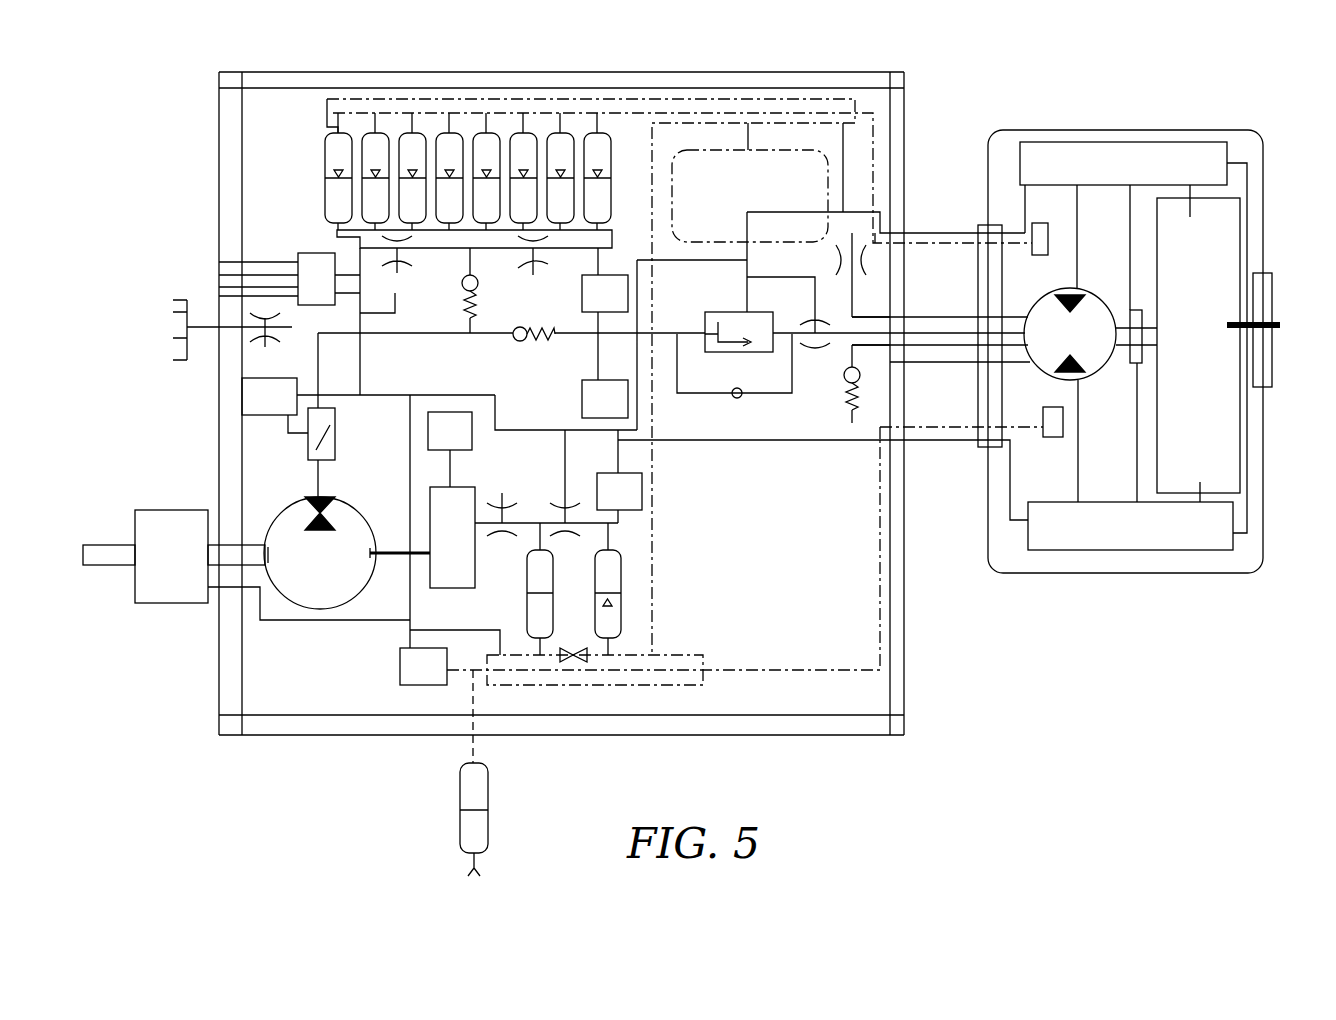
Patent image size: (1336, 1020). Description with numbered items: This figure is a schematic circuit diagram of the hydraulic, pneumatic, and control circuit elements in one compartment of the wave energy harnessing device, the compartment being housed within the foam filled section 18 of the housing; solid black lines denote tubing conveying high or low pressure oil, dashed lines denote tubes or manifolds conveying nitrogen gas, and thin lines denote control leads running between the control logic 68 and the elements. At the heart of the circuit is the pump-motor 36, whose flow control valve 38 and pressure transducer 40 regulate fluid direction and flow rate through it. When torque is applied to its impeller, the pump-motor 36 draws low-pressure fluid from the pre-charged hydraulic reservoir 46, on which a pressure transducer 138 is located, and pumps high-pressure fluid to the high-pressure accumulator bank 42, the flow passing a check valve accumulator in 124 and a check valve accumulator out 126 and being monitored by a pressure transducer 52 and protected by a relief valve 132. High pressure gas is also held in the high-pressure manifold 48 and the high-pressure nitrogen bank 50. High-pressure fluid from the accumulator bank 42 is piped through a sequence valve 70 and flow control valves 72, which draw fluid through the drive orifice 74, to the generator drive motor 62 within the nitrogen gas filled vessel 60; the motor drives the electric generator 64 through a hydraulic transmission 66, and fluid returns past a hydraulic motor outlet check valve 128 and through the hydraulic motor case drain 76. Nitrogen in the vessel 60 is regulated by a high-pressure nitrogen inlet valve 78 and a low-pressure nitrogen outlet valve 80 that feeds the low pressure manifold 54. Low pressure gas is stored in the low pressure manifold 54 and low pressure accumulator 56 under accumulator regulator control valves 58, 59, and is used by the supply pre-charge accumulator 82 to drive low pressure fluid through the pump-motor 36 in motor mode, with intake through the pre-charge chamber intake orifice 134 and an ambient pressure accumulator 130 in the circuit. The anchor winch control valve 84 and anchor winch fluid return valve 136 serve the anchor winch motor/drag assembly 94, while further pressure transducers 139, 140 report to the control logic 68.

The foam filled section 18 is at (180, 510).
The pump-motor 36 is at (340, 500).
The flow control valve 38 is at (335, 433).
The pressure transducer 40 is at (252, 418).
The high-pressure accumulator bank 42 is at (335, 200).
The pre-charged hydraulic reservoir 46 is at (477, 556).
The high-pressure manifold 48 is at (332, 108).
The high-pressure nitrogen bank 50 is at (774, 155).
The pressure transducer 52 is at (605, 275).
The low pressure manifold 54 is at (675, 655).
The low pressure accumulator 56 is at (598, 580).
The accumulator regulator control valve 58 is at (570, 648).
The accumulator regulator control valve 59 is at (565, 493).
The nitrogen gas filled vessel 60 is at (1008, 140).
The generator drive motor 62 is at (1100, 378).
The electric generator 64 is at (1240, 222).
The hydraulic transmission 66 is at (1132, 318).
The control logic module 68 is at (1128, 152).
The sequence valve 70 is at (740, 320).
The flow control valve 72 is at (815, 297).
The drive orifice 74 is at (527, 270).
The hydraulic motor case drain 76 is at (836, 261).
The high-pressure nitrogen inlet valve 78 is at (1040, 255).
The low-pressure nitrogen outlet valve 80 is at (1055, 440).
The supply pre-charge accumulator 82 is at (536, 612).
The anchor winch control valve 84 is at (302, 253).
The anchor winch motor/drag assembly 94 is at (184, 298).
The check valve accumulator in 124 is at (522, 341).
The check valve accumulator out 126 is at (462, 279).
The hydraulic motor outlet check valve 128 is at (846, 370).
The ambient pressure accumulator 130 is at (468, 820).
The relief valve 132 is at (582, 400).
The pre-charge chamber intake orifice 134 is at (505, 498).
The anchor winch fluid return valve 136 is at (270, 343).
The pressure transducer 138 is at (450, 412).
The pressure transducer 139 is at (644, 490).
The pressure transducer 140 is at (400, 665).